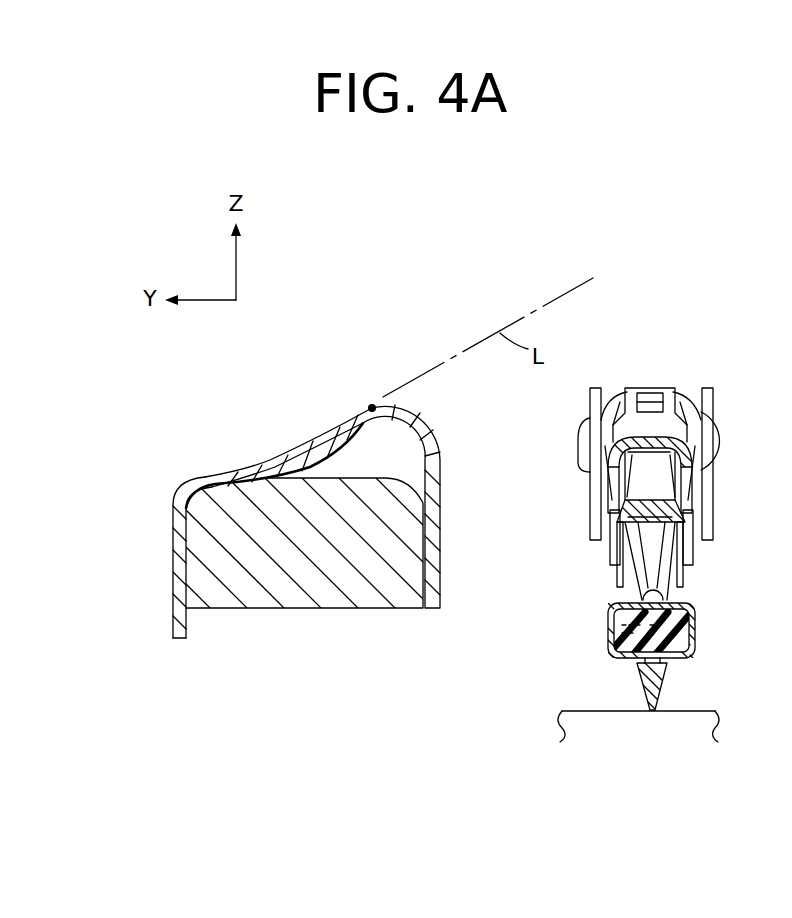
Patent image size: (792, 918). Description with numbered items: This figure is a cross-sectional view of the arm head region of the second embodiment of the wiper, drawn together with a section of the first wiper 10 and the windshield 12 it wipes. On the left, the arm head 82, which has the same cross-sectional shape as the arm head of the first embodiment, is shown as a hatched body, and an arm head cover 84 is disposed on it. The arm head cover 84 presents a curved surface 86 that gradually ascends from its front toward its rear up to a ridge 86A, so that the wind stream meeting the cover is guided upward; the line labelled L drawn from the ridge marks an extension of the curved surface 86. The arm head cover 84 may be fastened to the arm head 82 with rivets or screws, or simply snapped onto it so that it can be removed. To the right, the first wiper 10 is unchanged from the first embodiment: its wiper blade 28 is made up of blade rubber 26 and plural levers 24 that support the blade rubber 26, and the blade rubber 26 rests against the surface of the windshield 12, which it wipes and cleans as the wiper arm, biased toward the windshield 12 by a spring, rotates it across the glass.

The first wiper 10 is at (741, 356).
The windshield 12 is at (575, 709).
The levers 24 is at (660, 495).
The blade rubber 26 is at (663, 688).
The wiper blade 28 is at (726, 556).
The arm head 82 is at (331, 614).
The arm head cover 84 is at (442, 522).
The curved surface 86 is at (300, 443).
The ridge 86A is at (372, 405).